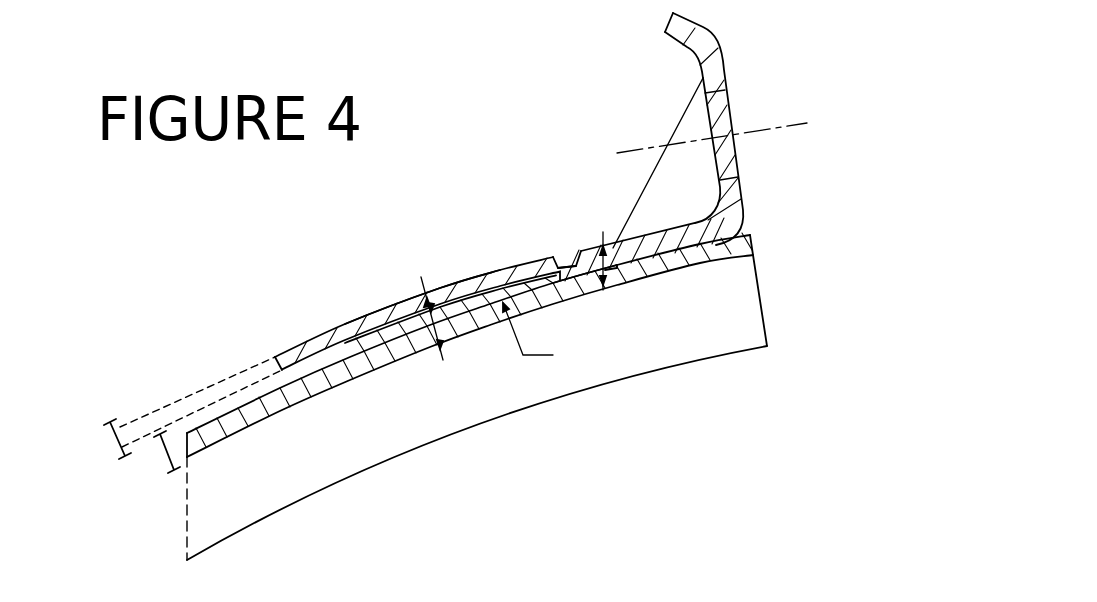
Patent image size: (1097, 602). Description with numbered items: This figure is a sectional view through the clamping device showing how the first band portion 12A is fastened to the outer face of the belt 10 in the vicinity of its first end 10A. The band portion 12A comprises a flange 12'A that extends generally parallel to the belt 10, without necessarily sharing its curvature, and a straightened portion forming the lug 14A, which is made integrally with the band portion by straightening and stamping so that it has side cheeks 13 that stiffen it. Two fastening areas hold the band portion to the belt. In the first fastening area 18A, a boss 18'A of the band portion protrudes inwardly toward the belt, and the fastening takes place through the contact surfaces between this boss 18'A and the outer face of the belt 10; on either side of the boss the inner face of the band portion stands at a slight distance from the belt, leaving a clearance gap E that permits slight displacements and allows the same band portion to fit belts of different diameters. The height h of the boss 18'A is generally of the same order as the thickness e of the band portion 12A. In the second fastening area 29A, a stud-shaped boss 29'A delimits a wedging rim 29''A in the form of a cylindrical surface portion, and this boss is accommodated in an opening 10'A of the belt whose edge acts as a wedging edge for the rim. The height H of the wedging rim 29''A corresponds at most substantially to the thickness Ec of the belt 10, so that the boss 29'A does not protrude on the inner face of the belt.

The belt 10 is at (477, 396).
The first end of the belt 10A is at (727, 252).
The opening 10'A is at (585, 305).
The first band portion 12A is at (312, 322).
The flange 12'A is at (422, 266).
The side cheeks 13 is at (690, 125).
The lug 14A is at (713, 53).
The first fastening area 18A is at (378, 306).
The boss 18'A is at (454, 339).
The second fastening area 29A is at (573, 240).
The boss 29'A is at (541, 252).
The wedging rim 29''A is at (642, 295).
The height of the boss h is at (423, 277).
The height of the wedging rim H is at (612, 232).
The clearance gap E is at (457, 351).
The thickness of the belt Ec is at (165, 470).
The thickness of the band portion e is at (110, 436).